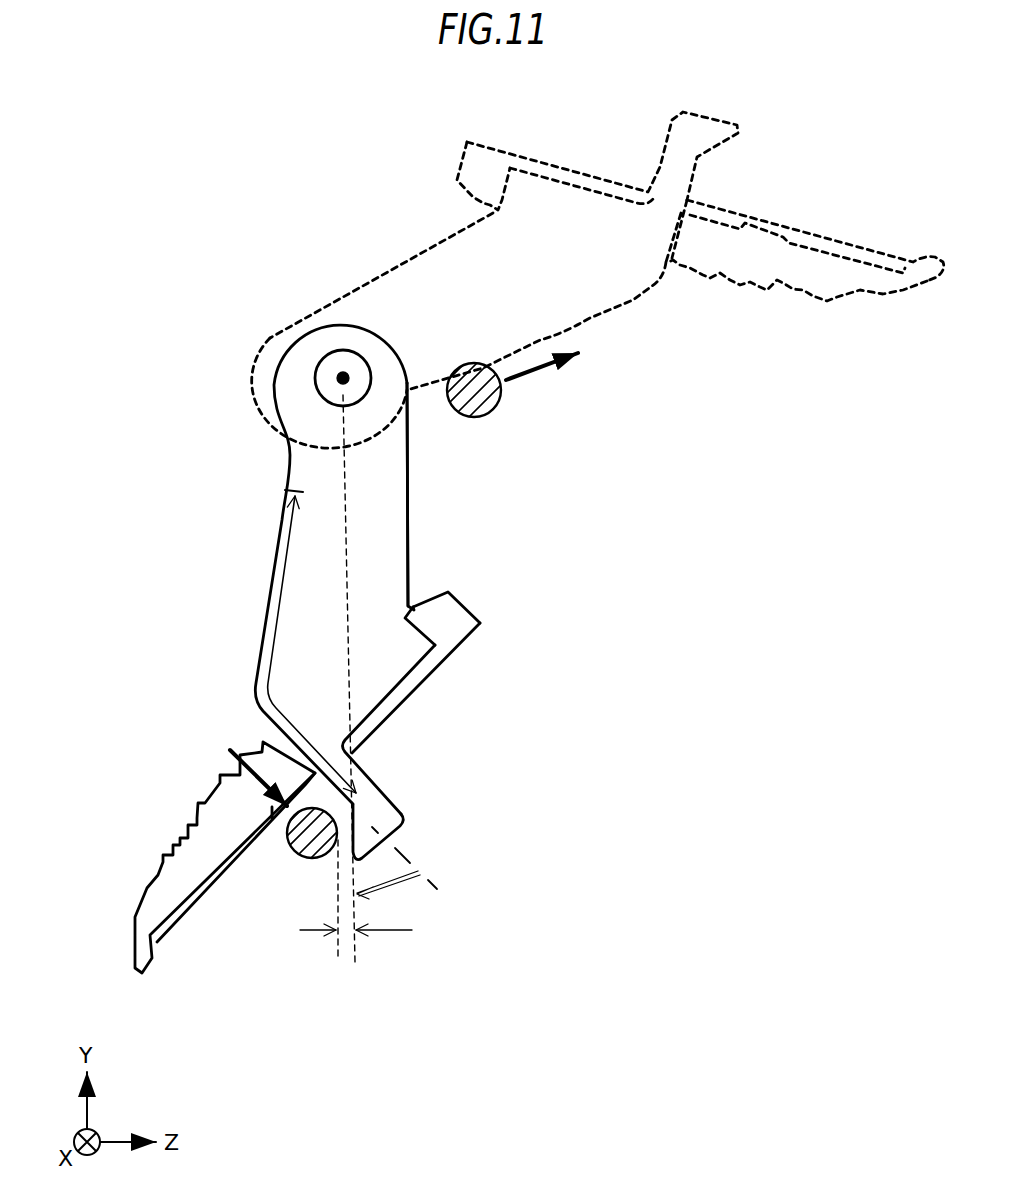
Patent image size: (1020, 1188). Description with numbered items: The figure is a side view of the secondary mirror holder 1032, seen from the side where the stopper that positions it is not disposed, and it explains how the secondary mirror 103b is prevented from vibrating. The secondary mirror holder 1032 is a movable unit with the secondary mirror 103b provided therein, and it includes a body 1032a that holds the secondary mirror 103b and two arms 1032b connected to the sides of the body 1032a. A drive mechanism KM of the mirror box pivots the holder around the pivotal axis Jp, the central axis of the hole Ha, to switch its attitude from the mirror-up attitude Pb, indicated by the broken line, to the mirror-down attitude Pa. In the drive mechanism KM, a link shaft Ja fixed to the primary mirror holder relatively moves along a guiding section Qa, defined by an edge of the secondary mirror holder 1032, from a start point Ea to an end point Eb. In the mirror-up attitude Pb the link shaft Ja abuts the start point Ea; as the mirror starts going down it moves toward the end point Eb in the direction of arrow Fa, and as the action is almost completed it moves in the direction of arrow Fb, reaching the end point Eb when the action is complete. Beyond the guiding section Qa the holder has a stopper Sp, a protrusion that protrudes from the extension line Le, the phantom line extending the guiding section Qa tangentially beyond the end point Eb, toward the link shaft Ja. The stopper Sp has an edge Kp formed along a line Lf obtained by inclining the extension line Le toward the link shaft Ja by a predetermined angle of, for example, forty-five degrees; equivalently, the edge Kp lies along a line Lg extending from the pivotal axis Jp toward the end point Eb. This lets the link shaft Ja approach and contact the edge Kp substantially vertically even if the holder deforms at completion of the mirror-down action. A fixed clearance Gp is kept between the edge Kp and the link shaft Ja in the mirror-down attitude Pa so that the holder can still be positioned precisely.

The mirror-up attitude Pb is at (360, 270).
The drive mechanism KM is at (228, 370).
The secondary mirror holder 1032 is at (226, 623).
The hole Ha is at (320, 349).
The pivotal axis Jp is at (344, 377).
The arms 1032b is at (410, 484).
The body 1032a is at (462, 644).
The secondary mirror 103b is at (439, 705).
The stopper Sp is at (400, 838).
The guiding section Qa is at (270, 683).
The start point Ea is at (474, 362).
The end point Eb is at (377, 783).
The mirror-down attitude Pa is at (168, 547).
The link shaft Ja is at (485, 418).
The arrow Fa is at (540, 372).
The arrow Fb is at (230, 758).
The line Lf is at (350, 950).
The line Lg is at (349, 556).
The extension line Le is at (442, 887).
The edge Kp is at (348, 853).
The clearance Gp is at (356, 945).